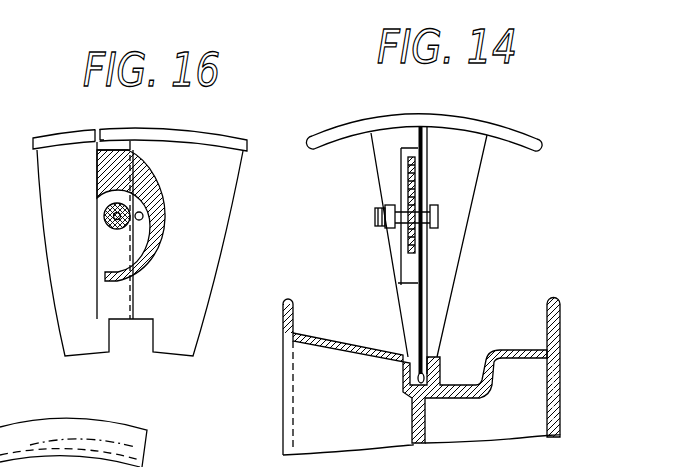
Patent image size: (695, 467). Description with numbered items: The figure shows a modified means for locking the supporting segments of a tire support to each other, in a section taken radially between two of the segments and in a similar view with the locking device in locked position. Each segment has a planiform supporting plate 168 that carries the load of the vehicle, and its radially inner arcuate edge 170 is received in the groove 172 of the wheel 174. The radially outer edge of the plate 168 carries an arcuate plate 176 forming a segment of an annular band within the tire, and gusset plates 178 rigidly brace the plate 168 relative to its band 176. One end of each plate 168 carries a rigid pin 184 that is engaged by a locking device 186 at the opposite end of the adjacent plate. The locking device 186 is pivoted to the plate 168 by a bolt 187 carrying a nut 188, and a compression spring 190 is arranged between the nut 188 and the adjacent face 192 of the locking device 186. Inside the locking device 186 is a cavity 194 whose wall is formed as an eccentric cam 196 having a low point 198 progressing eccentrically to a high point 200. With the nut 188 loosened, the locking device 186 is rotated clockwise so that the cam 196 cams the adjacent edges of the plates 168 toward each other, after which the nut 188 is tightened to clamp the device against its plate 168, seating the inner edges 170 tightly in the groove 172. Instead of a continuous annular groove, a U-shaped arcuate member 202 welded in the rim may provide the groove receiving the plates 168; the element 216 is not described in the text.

In FIG. 16, the planiform supporting plate 168 is at (59, 318).
In FIG. 14, the planiform supporting plate 168 is at (432, 298).
In FIG. 14, the radially inner arcuate edge 170 is at (424, 368).
In FIG. 14, the groove 172 is at (432, 378).
In FIG. 14, the wheel 174 is at (340, 338).
In FIG. 16, the arcuate plate 176 is at (208, 140).
In FIG. 14, the arcuate plate 176 is at (448, 121).
In FIG. 14, the gusset plates 178 is at (405, 297).
In FIG. 16, the rigid pin 184 is at (160, 187).
In FIG. 16, the locking device 186 is at (151, 166).
In FIG. 14, the locking device 186 is at (394, 145).
In FIG. 16, the bolt 187 is at (104, 216).
In FIG. 14, the bolt 187 is at (380, 212).
In FIG. 14, the nut 188 is at (385, 229).
In FIG. 14, the compression spring 190 is at (400, 195).
In FIG. 14, the adjacent face 192 is at (400, 183).
In FIG. 16, the cavity 194 is at (110, 241).
In FIG. 14, the cavity 194 is at (412, 180).
In FIG. 16, the eccentric cam 196 is at (144, 219).
In FIG. 14, the eccentric cam 196 is at (416, 238).
In FIG. 16, the low point 198 is at (97, 194).
In FIG. 16, the high point 200 is at (107, 264).
In FIG. 16, the arcuate member 202 is at (156, 440).
In FIG. 16, the slot in spoke end 216 is at (110, 327).